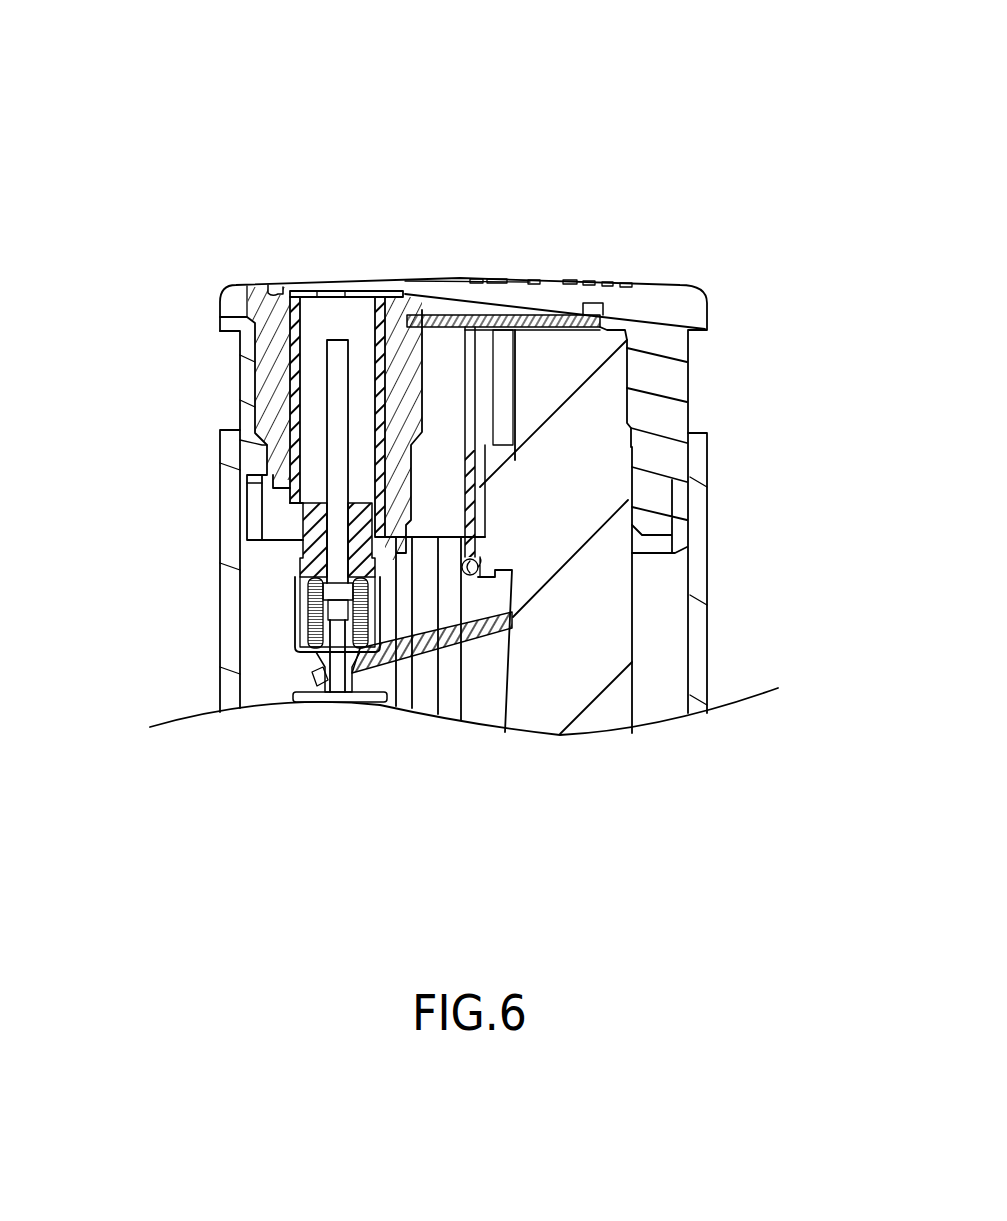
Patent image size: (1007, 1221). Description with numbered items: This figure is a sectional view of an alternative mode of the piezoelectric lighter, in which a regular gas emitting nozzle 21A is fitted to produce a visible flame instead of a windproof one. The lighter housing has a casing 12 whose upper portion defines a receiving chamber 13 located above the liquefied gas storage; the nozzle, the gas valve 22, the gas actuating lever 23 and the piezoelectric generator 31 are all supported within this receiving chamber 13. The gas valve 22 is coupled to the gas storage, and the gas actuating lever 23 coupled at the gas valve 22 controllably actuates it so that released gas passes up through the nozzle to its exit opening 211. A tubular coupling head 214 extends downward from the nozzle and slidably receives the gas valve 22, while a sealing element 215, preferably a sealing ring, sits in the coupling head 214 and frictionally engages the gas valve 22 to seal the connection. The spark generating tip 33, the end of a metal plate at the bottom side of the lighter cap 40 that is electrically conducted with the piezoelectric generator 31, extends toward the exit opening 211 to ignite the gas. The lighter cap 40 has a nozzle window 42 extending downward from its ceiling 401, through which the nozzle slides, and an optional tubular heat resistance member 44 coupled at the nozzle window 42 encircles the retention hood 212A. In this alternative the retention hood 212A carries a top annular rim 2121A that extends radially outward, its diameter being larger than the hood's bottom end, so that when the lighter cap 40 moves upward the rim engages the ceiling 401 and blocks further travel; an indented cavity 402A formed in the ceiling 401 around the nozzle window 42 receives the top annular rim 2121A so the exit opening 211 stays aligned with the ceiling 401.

The casing 12 is at (697, 635).
The receiving chamber 13 is at (655, 683).
The gas emitting nozzle 21A is at (337, 387).
The gas valve 22 is at (338, 662).
The gas actuating lever 23 is at (422, 637).
The piezoelectric generator 31 is at (585, 447).
The spark generating tip 33 is at (527, 314).
The lighter cap 40 is at (702, 290).
The nozzle window 42 is at (247, 277).
The heat resistance member 44 is at (280, 467).
The exit opening 211 is at (353, 270).
The coupling head 214 is at (300, 593).
The sealing element 215 is at (298, 637).
The retention hood 212A is at (298, 327).
The ceiling 401 is at (625, 277).
The indented cavity 402A is at (413, 270).
The top annular rim 2121A is at (282, 288).